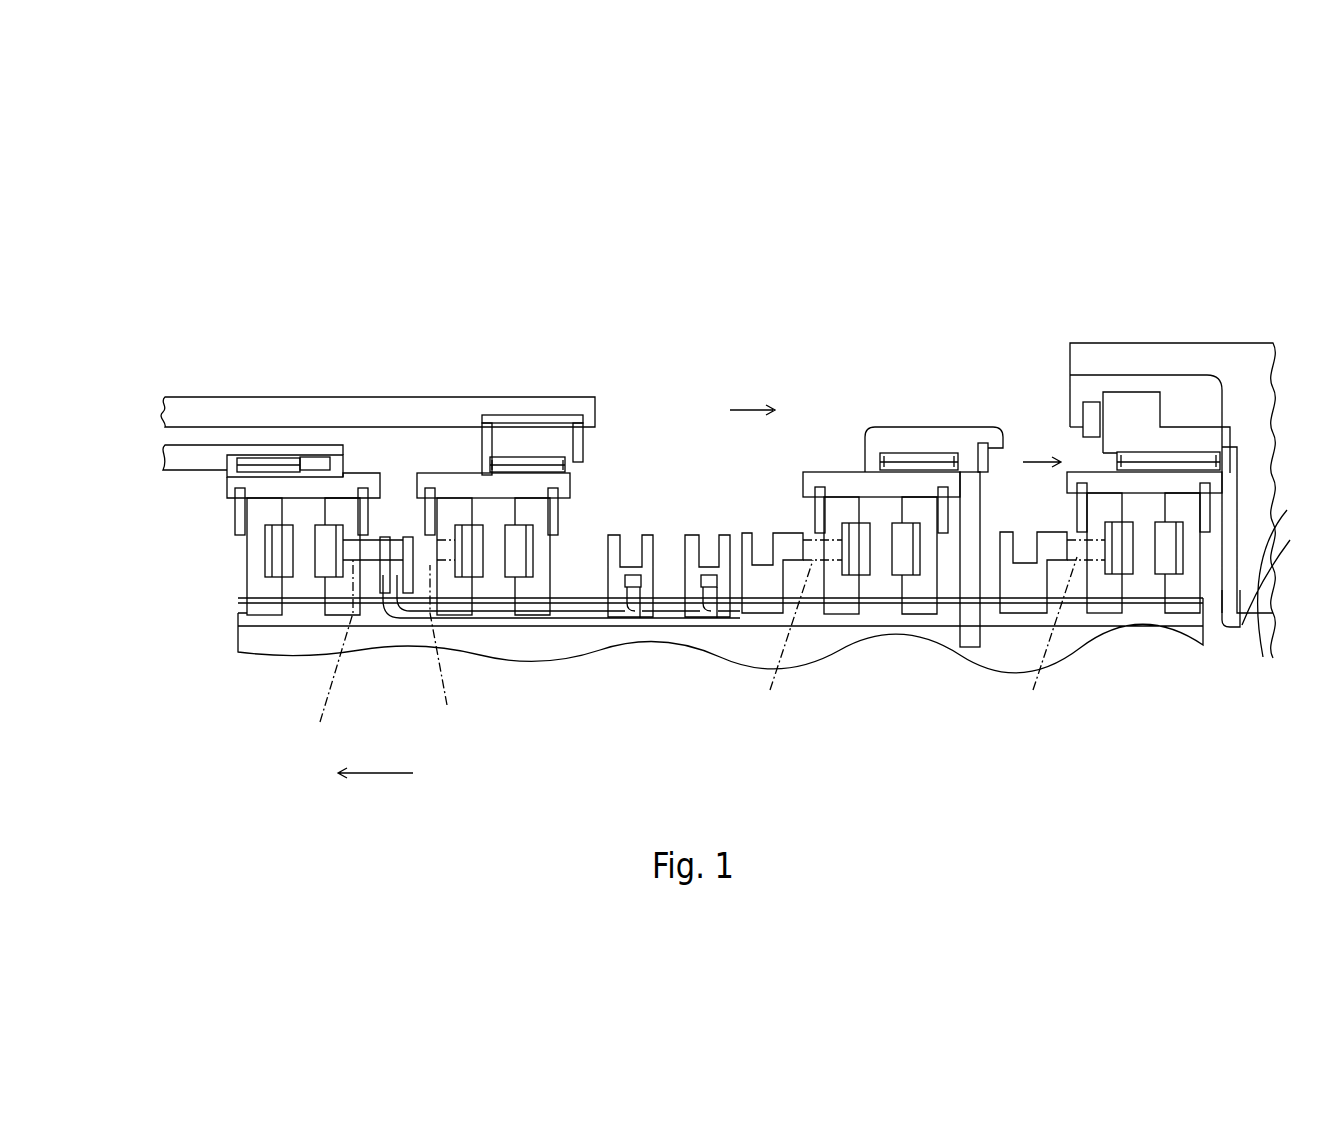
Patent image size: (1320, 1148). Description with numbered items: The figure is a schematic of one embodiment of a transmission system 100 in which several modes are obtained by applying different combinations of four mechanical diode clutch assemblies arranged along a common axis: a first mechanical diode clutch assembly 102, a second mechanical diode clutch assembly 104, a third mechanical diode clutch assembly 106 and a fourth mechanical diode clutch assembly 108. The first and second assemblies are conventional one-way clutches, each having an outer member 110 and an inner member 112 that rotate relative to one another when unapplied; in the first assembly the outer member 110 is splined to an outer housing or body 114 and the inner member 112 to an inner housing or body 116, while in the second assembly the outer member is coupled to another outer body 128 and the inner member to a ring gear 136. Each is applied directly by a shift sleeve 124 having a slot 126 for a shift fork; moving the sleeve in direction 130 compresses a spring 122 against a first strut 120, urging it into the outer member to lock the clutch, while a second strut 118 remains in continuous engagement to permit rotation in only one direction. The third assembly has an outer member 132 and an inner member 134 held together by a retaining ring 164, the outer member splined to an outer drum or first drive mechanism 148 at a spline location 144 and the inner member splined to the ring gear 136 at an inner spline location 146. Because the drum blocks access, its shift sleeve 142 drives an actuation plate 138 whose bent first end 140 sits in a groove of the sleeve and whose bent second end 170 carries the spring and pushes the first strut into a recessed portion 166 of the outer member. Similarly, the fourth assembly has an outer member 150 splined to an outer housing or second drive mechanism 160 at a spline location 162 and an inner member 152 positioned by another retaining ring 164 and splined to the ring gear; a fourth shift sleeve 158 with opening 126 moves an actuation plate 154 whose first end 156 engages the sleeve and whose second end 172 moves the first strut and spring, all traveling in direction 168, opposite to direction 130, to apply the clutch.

The transmission system 100 is at (247, 248).
The first mechanical diode clutch assembly 102 is at (1080, 460).
The second mechanical diode clutch assembly 104 is at (827, 477).
The third mechanical diode clutch assembly 106 is at (463, 458).
The fourth mechanical diode clutch assembly 108 is at (357, 462).
The outer member 110 is at (845, 460).
The inner member 112 is at (930, 543).
The outer housing or body 114 is at (1187, 443).
The inner housing or body 116 is at (975, 640).
The second strut 118 is at (262, 566).
The first strut 120 is at (268, 547).
The spring 122 is at (702, 648).
The shift sleeve 124 is at (745, 530).
The recess or defined slot 126 is at (712, 528).
The outer body 128 is at (910, 440).
The apply direction arrow 130 is at (740, 402).
The outer member 132 is at (510, 483).
The inner member 134 is at (525, 553).
The inner housing or body / ring gear 136 is at (237, 645).
The actuation plate 138 is at (398, 588).
The first end 140 is at (740, 592).
The shift sleeve 142 is at (668, 565).
The spline location 144 is at (545, 445).
The inner spline location 146 is at (557, 616).
The outer housing or drum / first drive mechanism 148 is at (193, 410).
The outer member 150 is at (265, 478).
The inner member 152 is at (247, 600).
The actuation plate 154 is at (380, 585).
The first end 156 is at (613, 590).
The fourth shift sleeve 158 is at (590, 565).
The outer body or housing / second drive mechanism 160 is at (163, 458).
The spline location 162 is at (247, 450).
The retaining ring 164 is at (430, 490).
The recessed portion 166 is at (321, 568).
The apply direction arrow 168 is at (377, 773).
The second end 170 is at (387, 545).
The second end 172 is at (330, 500).